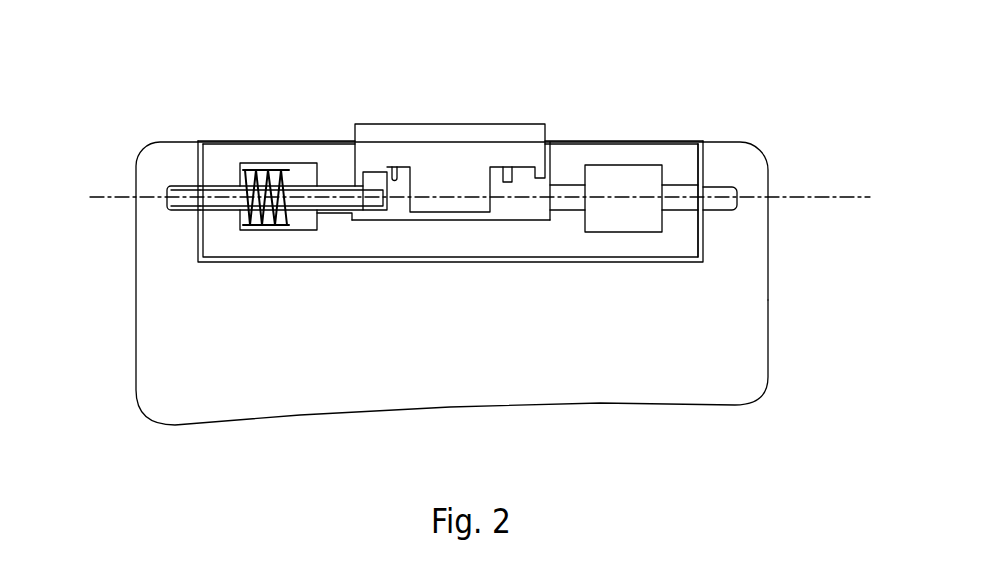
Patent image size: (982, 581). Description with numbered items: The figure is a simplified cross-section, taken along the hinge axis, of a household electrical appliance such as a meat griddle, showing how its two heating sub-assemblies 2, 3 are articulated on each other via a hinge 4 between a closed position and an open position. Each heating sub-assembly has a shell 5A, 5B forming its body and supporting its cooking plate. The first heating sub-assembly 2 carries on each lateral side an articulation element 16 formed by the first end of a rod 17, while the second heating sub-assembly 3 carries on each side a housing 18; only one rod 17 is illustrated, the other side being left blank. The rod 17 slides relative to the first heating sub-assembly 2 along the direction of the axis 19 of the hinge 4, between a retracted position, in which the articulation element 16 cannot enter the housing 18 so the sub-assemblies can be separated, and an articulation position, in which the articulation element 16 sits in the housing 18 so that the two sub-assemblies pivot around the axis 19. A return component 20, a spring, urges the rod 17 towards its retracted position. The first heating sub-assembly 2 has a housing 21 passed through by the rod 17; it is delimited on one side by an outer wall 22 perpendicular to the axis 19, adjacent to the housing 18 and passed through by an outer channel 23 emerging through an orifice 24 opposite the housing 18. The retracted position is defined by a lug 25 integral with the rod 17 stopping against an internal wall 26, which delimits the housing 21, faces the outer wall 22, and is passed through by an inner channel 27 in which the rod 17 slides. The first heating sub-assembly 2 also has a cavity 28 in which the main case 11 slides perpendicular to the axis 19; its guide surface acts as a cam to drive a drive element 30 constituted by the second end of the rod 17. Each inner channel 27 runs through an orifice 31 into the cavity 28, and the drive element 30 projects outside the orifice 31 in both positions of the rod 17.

The first heating sub-assembly 2 is at (450, 247).
The second heating sub-assembly 3 is at (703, 375).
The hinge 4 is at (792, 166).
The shell 5A is at (655, 152).
The shell 5B is at (506, 333).
The main case 11 is at (450, 259).
The articulation element 16 is at (190, 183).
The rod 17 is at (254, 122).
The housing 18 is at (729, 188).
The axis 19 is at (843, 199).
The return component 20 is at (262, 168).
The housing 21 is at (623, 180).
The outer wall 22 is at (677, 175).
The outer channel 23 is at (680, 203).
The orifice 24 is at (725, 189).
The lug 25 is at (283, 223).
The internal wall 26 is at (568, 175).
The inner channel 27 is at (565, 205).
The cavity 28 is at (513, 203).
The drive element 30 is at (387, 196).
The orifice 31 is at (550, 203).